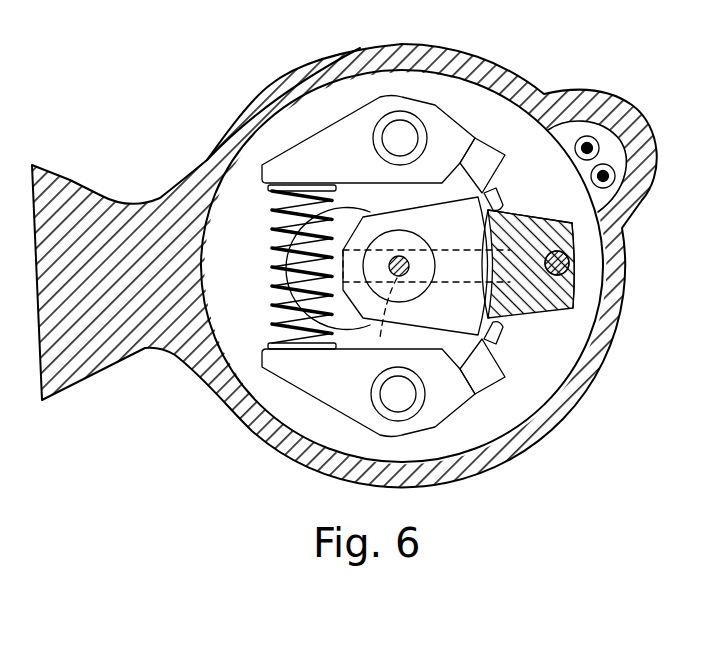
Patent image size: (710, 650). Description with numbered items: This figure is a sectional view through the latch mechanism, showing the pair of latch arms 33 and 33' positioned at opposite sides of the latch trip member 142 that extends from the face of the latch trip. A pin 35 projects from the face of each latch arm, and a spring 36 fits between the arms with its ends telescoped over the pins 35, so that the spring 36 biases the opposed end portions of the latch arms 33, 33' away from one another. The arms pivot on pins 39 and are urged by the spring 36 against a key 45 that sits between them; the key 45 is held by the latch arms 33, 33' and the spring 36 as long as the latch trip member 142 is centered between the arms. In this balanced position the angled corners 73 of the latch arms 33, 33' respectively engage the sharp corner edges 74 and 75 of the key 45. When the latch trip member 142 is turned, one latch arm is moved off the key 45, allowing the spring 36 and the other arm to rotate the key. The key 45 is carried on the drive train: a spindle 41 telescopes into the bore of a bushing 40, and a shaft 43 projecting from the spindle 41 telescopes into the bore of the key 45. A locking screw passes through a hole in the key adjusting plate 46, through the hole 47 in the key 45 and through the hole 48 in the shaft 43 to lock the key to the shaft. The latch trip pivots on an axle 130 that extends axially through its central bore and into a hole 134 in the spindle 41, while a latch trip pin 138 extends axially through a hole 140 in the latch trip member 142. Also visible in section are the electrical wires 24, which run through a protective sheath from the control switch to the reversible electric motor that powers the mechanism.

The electrical wires 24 is at (614, 176).
The latch arm 33 is at (368, 393).
The latch arm 33' is at (368, 140).
The pin 35 is at (268, 189).
The spring 36 is at (270, 243).
The pins 39 is at (395, 134).
The bushing 40 is at (427, 140).
The spindle 41 is at (382, 204).
The shaft 43 is at (418, 291).
The key 45 is at (477, 228).
The key adjusting plate 46 is at (486, 290).
The hole 47 is at (540, 265).
The hole 48 is at (380, 336).
The angled corner 73 is at (500, 168).
The sharp corner edge 74 is at (501, 201).
The sharp corner edge 75 is at (501, 331).
The axle 130 is at (424, 248).
The hole 134 is at (392, 258).
The latch trip pin 138 is at (569, 264).
The hole 140 is at (557, 276).
The latch trip member 142 is at (542, 279).